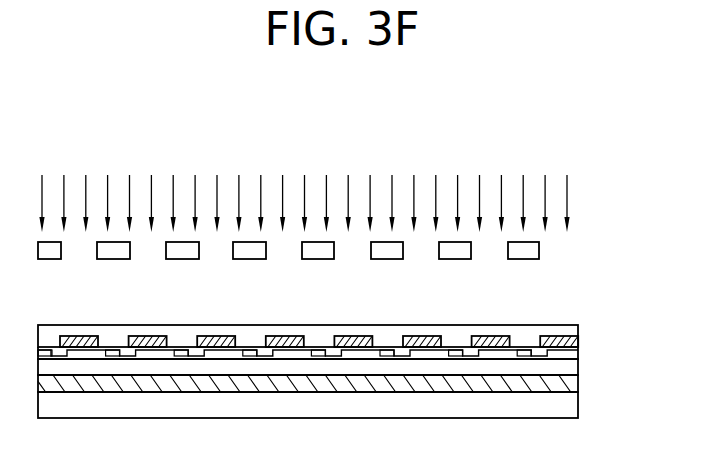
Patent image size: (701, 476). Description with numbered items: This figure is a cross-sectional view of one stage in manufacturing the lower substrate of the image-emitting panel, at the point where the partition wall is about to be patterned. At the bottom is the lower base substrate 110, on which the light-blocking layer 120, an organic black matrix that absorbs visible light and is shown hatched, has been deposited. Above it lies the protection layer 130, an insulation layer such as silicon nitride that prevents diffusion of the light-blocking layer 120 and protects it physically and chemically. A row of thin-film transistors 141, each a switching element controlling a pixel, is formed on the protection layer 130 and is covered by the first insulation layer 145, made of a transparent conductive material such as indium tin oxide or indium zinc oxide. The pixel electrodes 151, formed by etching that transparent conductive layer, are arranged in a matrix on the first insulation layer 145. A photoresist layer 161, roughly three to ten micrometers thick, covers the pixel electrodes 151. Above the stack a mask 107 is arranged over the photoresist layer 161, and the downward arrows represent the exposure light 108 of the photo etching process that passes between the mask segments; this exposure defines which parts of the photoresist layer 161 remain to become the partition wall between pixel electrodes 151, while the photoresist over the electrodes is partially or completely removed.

The light/laser irradiation 108 is at (568, 193).
The mask pattern 107 is at (539, 248).
The photoresist layer 161 is at (527, 341).
The pixel electrode 151 is at (577, 323).
The thin-film transistor 141 is at (578, 345).
The first insulation layer 145 is at (578, 354).
The protection layer 130 is at (577, 368).
The light-blocking layer 120 is at (577, 387).
The lower base substrate 110 is at (577, 407).